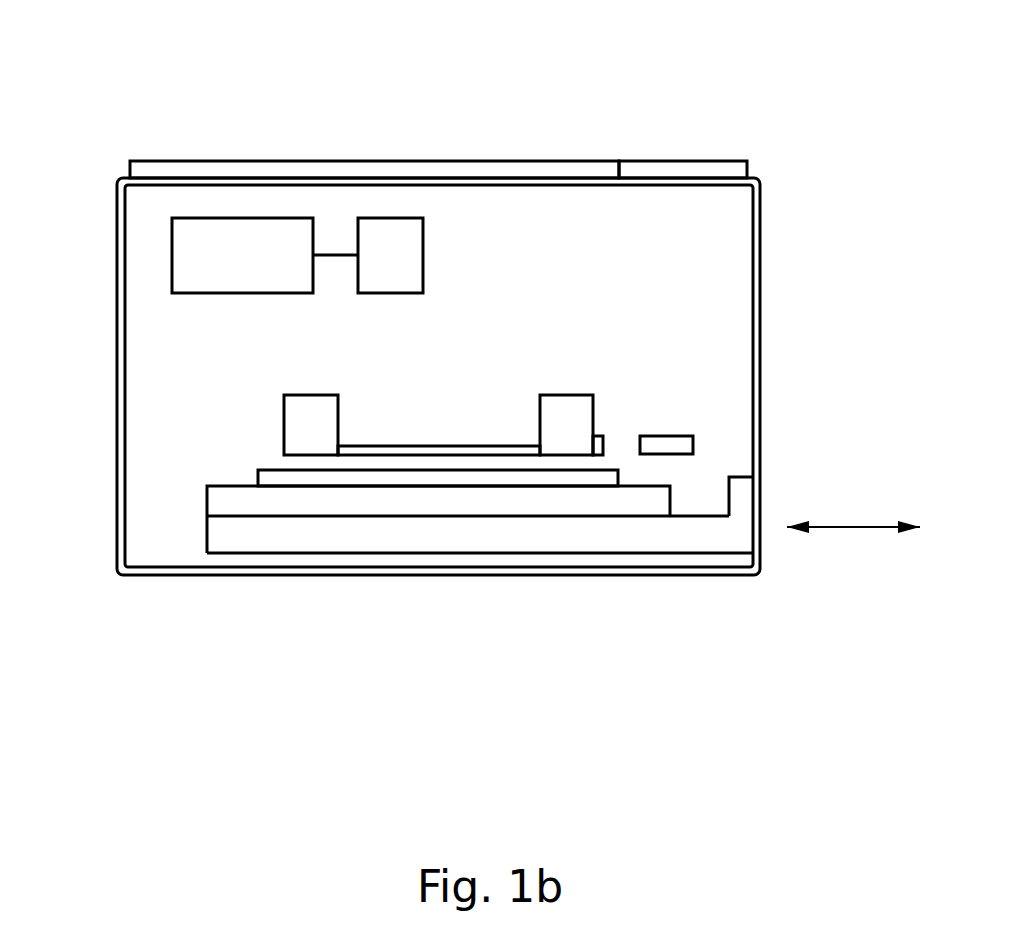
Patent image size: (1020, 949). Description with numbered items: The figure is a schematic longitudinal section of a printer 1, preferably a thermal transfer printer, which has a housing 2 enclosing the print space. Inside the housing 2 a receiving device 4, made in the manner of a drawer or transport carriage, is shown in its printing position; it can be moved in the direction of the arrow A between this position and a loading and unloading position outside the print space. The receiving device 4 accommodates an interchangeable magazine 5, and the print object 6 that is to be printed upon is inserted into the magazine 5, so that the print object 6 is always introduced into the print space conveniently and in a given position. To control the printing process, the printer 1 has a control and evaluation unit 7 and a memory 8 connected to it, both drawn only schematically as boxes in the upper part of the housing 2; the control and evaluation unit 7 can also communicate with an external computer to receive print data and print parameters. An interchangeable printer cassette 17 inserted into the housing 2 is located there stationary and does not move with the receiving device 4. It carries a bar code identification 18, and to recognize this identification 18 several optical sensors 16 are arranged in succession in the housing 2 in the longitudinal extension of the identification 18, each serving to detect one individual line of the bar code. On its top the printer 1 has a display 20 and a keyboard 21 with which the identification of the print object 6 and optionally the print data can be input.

The printer 1 is at (662, 605).
The housing 2 is at (162, 577).
The receiving device 4 is at (723, 537).
The magazine 5 is at (583, 500).
The print object 6 is at (427, 478).
The control and evaluation unit 7 is at (246, 240).
The memory 8 is at (385, 252).
The optical sensors 16 is at (673, 445).
The printer cassette 17 is at (245, 401).
The identification 18 is at (601, 440).
The display 20 is at (488, 170).
The keyboard 21 is at (655, 170).
The arrow A is at (852, 527).